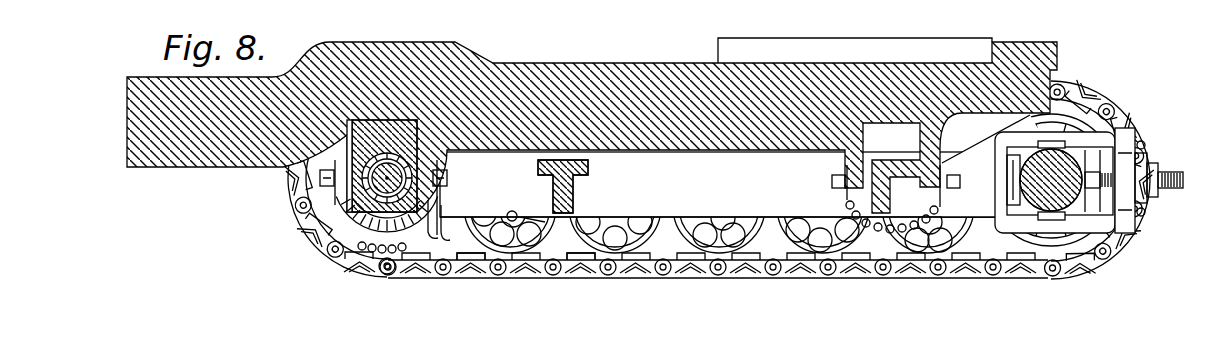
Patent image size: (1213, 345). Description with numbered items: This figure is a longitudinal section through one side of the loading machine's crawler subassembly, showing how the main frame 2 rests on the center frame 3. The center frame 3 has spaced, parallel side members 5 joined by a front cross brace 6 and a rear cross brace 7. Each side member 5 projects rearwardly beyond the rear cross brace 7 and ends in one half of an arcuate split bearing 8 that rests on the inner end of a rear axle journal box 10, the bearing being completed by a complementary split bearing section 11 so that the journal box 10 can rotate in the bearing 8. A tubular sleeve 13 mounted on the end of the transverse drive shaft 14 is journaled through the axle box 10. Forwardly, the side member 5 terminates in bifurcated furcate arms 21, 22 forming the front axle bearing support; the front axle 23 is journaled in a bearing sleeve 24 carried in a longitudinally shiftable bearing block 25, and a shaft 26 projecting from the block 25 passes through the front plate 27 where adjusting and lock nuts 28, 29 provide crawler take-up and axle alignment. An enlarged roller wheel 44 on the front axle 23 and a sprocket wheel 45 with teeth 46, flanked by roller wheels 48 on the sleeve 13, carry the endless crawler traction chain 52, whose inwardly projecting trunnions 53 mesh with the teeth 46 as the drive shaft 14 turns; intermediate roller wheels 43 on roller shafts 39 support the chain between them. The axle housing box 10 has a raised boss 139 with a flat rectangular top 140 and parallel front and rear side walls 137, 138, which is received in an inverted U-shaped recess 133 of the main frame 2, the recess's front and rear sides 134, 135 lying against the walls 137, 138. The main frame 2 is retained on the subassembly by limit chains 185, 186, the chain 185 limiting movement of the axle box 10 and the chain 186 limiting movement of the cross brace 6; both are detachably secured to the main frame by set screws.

The main frame 2 is at (657, 63).
The center frame 3 is at (662, 220).
The side members 5 is at (693, 213).
The front cross brace 6 is at (900, 167).
The rear cross brace 7 is at (720, 184).
The split bearing 8 is at (392, 162).
The rear axle journal box 10 is at (362, 122).
The split bearing section 11 is at (365, 225).
The tubular sleeve 13 is at (385, 213).
The drive shaft 14 is at (323, 173).
The furcate arm 21 is at (1087, 130).
The furcate arm 22 is at (1103, 230).
The front axle 23 is at (1038, 184).
The bearing sleeve 24 is at (1022, 163).
The bearing block 25 is at (1125, 213).
The shaft 26 is at (1183, 178).
The front plate 27 is at (1130, 130).
The adjusting nut 28 is at (1143, 160).
The lock nut 29 is at (1153, 168).
The roller shaft 39 is at (513, 212).
The roller wheel 43 is at (719, 207).
The enlarged roller wheel 44 is at (1020, 213).
The sprocket wheel 45 is at (432, 237).
The teeth 46 is at (438, 243).
The roller wheel 48 is at (440, 237).
The endless crawler traction chain 52 is at (720, 277).
The trunnion 53 is at (771, 300).
The inverted U-shaped recess 133 is at (350, 128).
The front side of recess 134 is at (445, 152).
The rear side of recess 135 is at (330, 205).
The front side wall 137 is at (428, 165).
The rear side wall 138 is at (343, 142).
The raised boss 139 is at (418, 128).
The flat rectangular top 140 is at (405, 122).
The limit chain 185 is at (345, 228).
The limit chain 186 is at (880, 230).